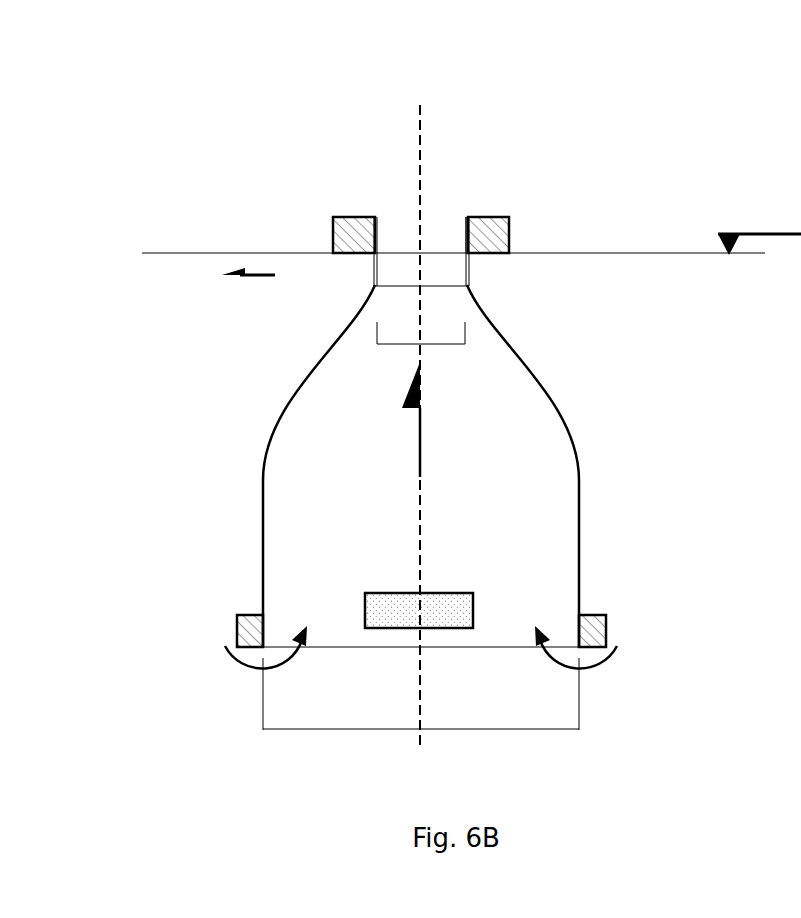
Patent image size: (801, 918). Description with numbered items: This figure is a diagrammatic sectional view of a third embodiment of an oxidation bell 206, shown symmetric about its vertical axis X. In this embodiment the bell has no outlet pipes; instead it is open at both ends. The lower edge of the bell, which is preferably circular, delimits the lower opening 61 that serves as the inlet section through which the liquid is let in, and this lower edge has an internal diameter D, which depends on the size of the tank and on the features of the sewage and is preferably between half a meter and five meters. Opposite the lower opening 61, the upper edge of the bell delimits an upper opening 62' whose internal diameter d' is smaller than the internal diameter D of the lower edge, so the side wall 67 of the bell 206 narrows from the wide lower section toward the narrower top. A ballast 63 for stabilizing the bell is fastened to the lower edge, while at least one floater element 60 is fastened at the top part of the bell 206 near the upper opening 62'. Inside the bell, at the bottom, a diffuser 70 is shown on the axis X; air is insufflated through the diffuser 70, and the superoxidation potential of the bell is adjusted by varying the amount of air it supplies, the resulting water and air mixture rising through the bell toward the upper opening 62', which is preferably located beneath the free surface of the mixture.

The floater element 60 is at (360, 223).
The lower opening 61 is at (350, 643).
The upper opening 62' is at (445, 145).
The ballast 63 is at (600, 625).
The side wall 67 is at (263, 458).
The diffuser 70 is at (455, 605).
The oxidation bell 206 is at (486, 145).
The vertical axis X is at (424, 162).
The internal diameter of the upper opening d' is at (335, 366).
The internal diameter D is at (421, 714).